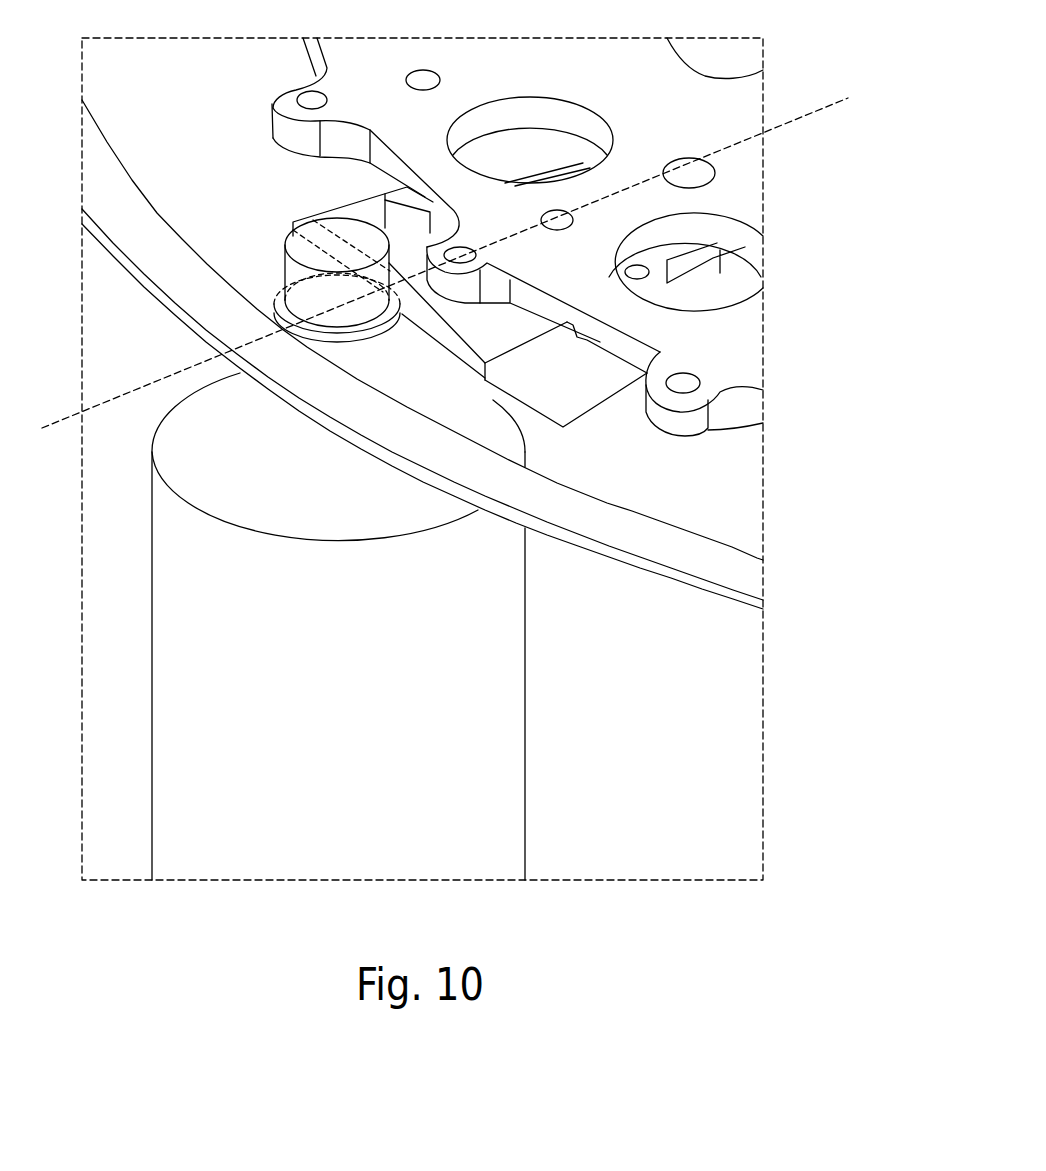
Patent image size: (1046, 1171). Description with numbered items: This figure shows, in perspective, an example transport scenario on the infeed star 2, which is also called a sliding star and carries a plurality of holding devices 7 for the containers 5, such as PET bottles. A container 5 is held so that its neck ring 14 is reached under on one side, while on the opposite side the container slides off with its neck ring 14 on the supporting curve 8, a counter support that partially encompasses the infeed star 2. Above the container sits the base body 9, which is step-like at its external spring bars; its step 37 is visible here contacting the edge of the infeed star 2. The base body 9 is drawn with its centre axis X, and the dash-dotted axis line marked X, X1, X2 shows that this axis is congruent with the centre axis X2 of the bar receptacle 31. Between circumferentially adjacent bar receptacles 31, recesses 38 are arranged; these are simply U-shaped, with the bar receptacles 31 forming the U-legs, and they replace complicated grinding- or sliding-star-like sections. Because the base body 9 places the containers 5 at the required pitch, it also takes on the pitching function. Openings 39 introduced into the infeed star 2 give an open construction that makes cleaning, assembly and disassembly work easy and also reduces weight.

The infeed star 2 is at (542, 263).
The container 5 is at (190, 754).
The holding device 7 is at (518, 380).
The base body 9 is at (518, 380).
The supporting curve 8 is at (757, 577).
The neck ring 14 is at (262, 291).
The bar receptacle 31 is at (707, 443).
The step 37 is at (588, 360).
The recess 38 is at (376, 182).
The opening 39 is at (508, 135).
The centre axis X is at (465, 248).
The axis X1 is at (465, 248).
The centre axis of the bar receptacle X2 is at (465, 248).